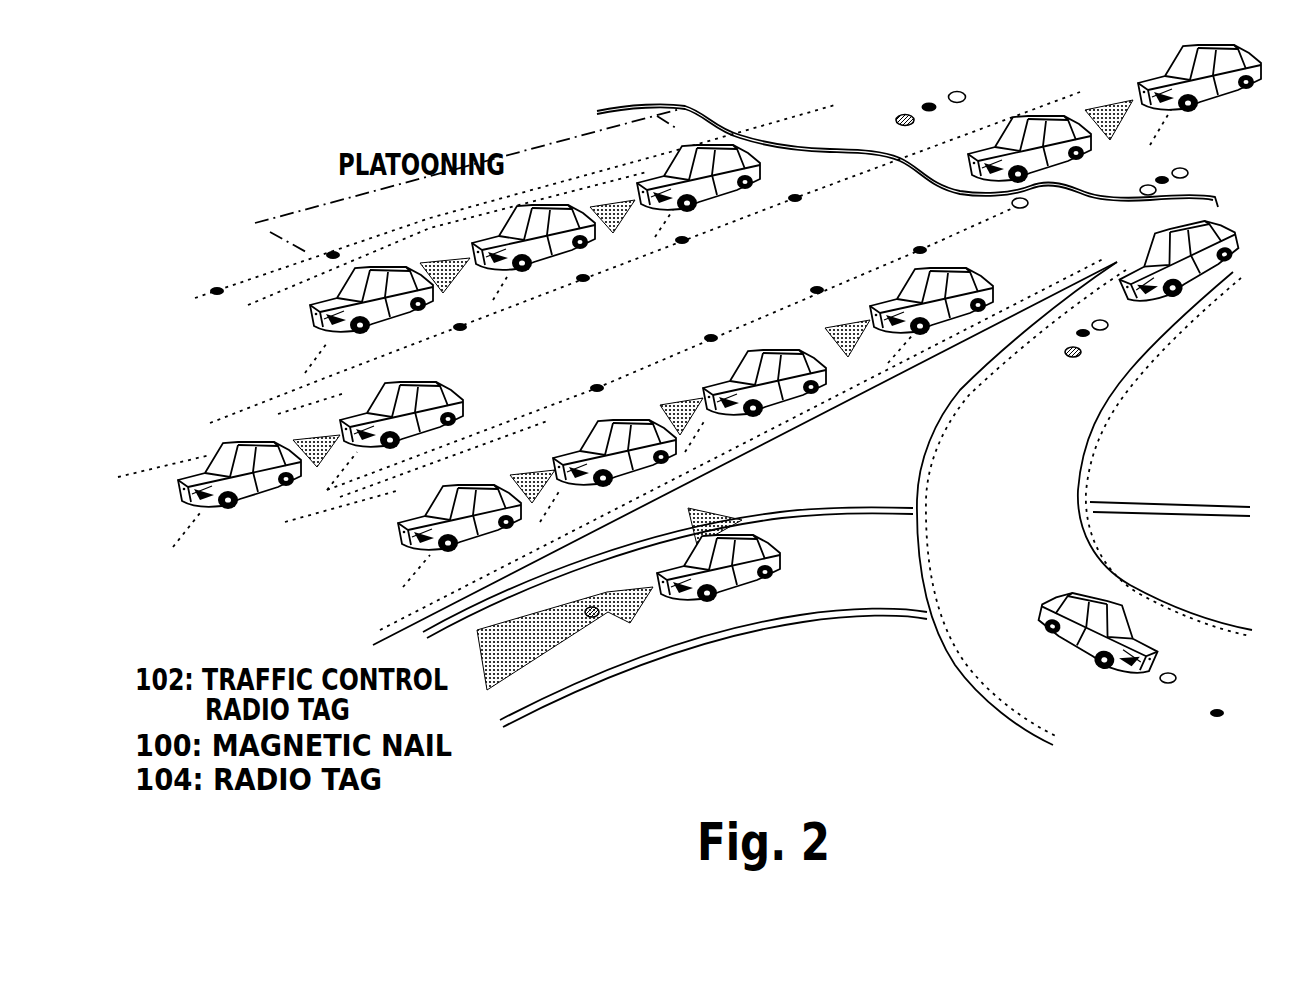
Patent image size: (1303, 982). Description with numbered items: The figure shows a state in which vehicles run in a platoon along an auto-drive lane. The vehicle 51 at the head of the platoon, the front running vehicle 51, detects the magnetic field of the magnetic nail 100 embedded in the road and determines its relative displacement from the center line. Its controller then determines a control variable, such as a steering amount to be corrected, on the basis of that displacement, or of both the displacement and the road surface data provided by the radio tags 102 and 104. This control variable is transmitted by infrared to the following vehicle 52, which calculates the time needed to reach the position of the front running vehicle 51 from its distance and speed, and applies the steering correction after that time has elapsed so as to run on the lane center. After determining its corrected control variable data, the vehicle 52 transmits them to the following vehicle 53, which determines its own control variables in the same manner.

The front running vehicle 51 is at (400, 323).
The following vehicle 52 is at (550, 262).
The following vehicle 53 is at (718, 205).
The magnetic nail 100 is at (928, 96).
The radio tag 102 is at (962, 84).
The radio tag 104 is at (896, 116).